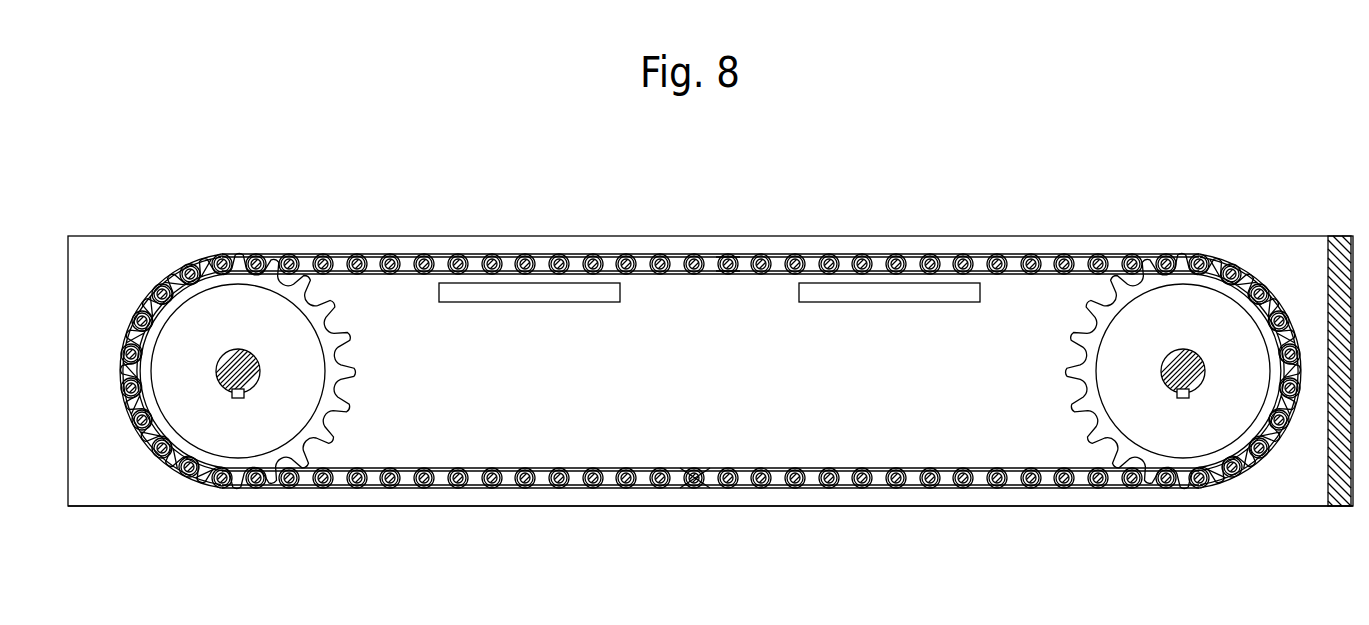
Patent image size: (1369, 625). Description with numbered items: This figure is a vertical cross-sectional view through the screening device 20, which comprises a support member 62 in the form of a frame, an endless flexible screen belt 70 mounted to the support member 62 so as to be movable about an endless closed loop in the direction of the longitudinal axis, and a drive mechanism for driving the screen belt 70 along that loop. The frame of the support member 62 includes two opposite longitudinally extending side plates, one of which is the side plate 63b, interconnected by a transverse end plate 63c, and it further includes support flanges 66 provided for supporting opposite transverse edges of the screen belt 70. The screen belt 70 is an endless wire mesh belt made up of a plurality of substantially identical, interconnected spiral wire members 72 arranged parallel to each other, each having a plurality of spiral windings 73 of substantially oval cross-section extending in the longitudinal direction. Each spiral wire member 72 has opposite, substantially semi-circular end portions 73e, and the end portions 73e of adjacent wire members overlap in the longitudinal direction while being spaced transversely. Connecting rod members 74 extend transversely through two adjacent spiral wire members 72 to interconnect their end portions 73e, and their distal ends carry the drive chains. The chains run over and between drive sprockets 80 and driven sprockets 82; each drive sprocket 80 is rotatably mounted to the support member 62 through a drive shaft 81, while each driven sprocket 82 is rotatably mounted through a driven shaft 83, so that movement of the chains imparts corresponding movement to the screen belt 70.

The screening device 20 is at (945, 204).
The support member 62 is at (110, 228).
The side plate 63b is at (97, 507).
The transverse end plate 63c is at (1338, 507).
The support flange 66 is at (527, 302).
The endless flexible screen belt 70 is at (368, 500).
The spiral wire member 72 is at (645, 253).
The spiral winding 73 is at (684, 476).
The end portion 73e is at (717, 266).
The connecting rod member 74 is at (795, 258).
The drive sprocket 80 is at (326, 420).
The drive shaft 81 is at (240, 357).
The driven sprocket 82 is at (1094, 420).
The driven shaft 83 is at (1186, 357).